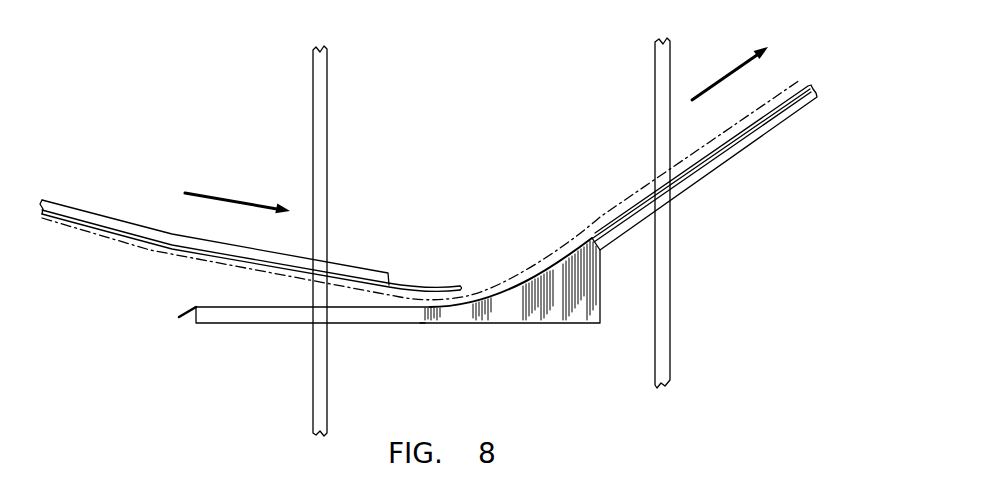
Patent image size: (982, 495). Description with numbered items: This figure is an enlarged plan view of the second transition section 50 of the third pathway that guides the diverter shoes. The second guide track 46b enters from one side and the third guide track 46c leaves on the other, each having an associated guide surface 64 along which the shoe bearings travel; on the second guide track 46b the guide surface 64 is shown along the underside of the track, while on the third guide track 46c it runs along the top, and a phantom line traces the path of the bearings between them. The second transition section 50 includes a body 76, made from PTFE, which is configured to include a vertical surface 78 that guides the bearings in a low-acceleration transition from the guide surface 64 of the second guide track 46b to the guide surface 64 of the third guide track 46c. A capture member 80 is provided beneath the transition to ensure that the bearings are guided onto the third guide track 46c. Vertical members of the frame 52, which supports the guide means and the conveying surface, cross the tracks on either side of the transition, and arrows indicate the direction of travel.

The second guide track 46b is at (95, 211).
The third guide track 46c is at (722, 165).
The second transition section 50 is at (496, 335).
The frame 52 is at (327, 135).
The guide surface 64 is at (125, 230).
The body 76 is at (513, 277).
The vertical surface 78 is at (553, 270).
The capture member 80 is at (265, 323).